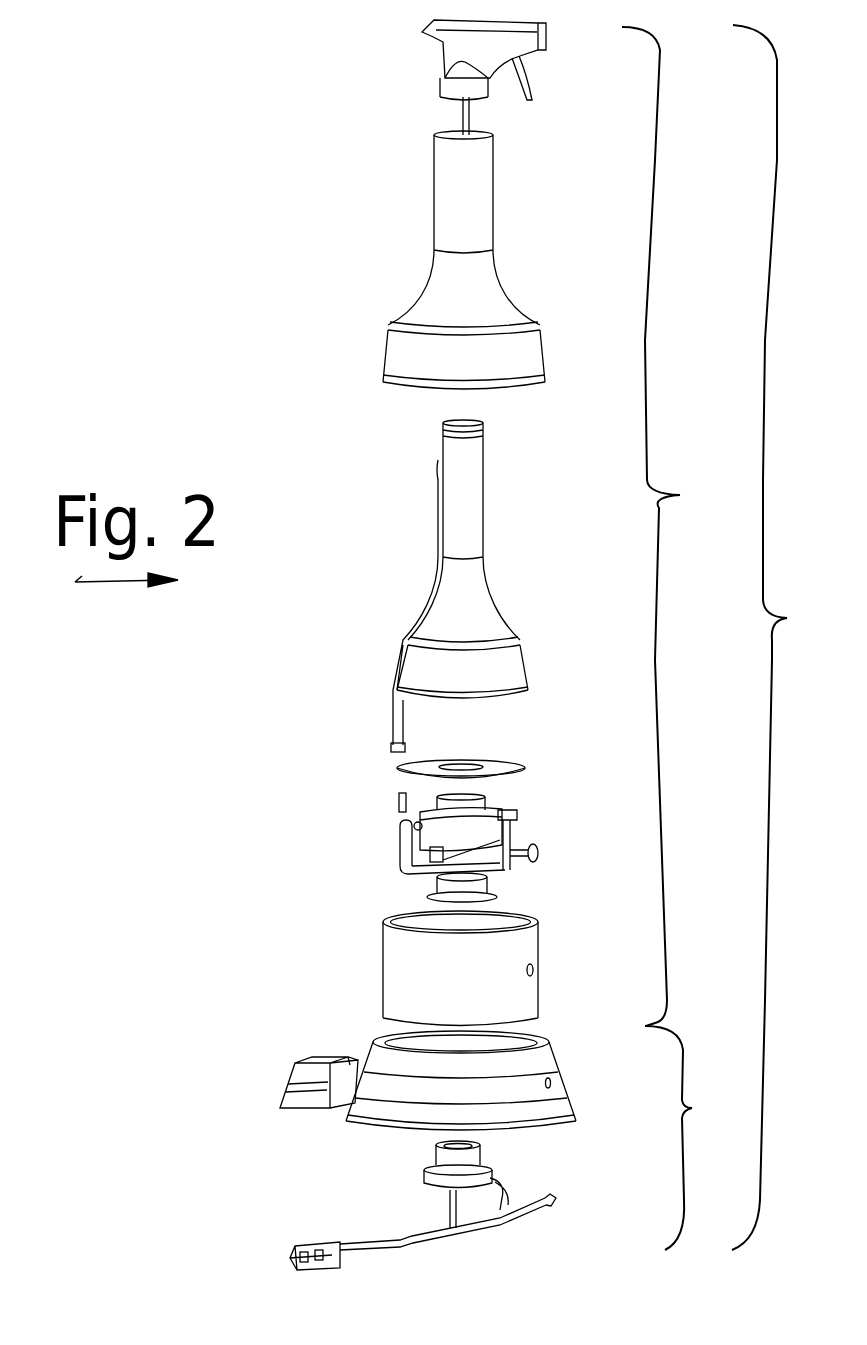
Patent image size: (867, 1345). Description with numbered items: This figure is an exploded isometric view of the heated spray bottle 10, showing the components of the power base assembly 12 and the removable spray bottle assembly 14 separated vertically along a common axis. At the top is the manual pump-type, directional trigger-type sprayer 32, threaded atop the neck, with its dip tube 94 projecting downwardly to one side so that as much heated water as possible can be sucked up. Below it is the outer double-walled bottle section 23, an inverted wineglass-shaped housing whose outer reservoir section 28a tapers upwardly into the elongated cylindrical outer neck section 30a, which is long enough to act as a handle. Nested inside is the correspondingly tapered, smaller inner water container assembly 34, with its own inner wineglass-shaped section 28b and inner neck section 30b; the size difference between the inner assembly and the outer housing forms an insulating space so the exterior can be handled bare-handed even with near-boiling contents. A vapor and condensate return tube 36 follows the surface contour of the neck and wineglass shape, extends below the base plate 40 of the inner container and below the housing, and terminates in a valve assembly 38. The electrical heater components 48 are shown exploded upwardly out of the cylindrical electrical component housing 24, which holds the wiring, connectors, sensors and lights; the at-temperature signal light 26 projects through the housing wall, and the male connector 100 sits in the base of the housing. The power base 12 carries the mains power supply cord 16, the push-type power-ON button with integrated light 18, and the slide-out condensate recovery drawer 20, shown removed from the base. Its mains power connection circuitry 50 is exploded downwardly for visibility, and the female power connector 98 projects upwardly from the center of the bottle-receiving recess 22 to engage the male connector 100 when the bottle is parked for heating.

The heated spray bottle 10 is at (780, 637).
The power base assembly 12 is at (689, 1138).
The spray bottle assembly 14 is at (672, 526).
The mains power supply cord 16 is at (385, 1238).
The power-ON button with integrated light 18 is at (556, 1198).
The condensate recovery drawer 20 is at (306, 1062).
The recess 22 is at (527, 1042).
The double-walled bottle section 23 is at (447, 260).
The electrical component housing 24 is at (383, 968).
The at-temperature signal light 26 is at (541, 858).
The outer wineglass-shaped reservoir section 28a is at (388, 358).
The inner wineglass-shaped reservoir section 28b is at (528, 660).
The outer neck section 30a is at (434, 190).
The inner neck section 30b is at (485, 476).
The trigger-type sprayer 32 is at (440, 42).
The inner water container assembly 34 is at (498, 559).
The vapor and condensate return tube 36 is at (410, 600).
The valve assembly 38 is at (398, 800).
The base plate 40 is at (525, 766).
The electrical heater components 48 is at (512, 844).
The mains power connection circuitry 50 is at (482, 1180).
The dip tube 94 is at (462, 113).
The female power connector 98 is at (440, 1148).
The male connector 100 is at (437, 886).